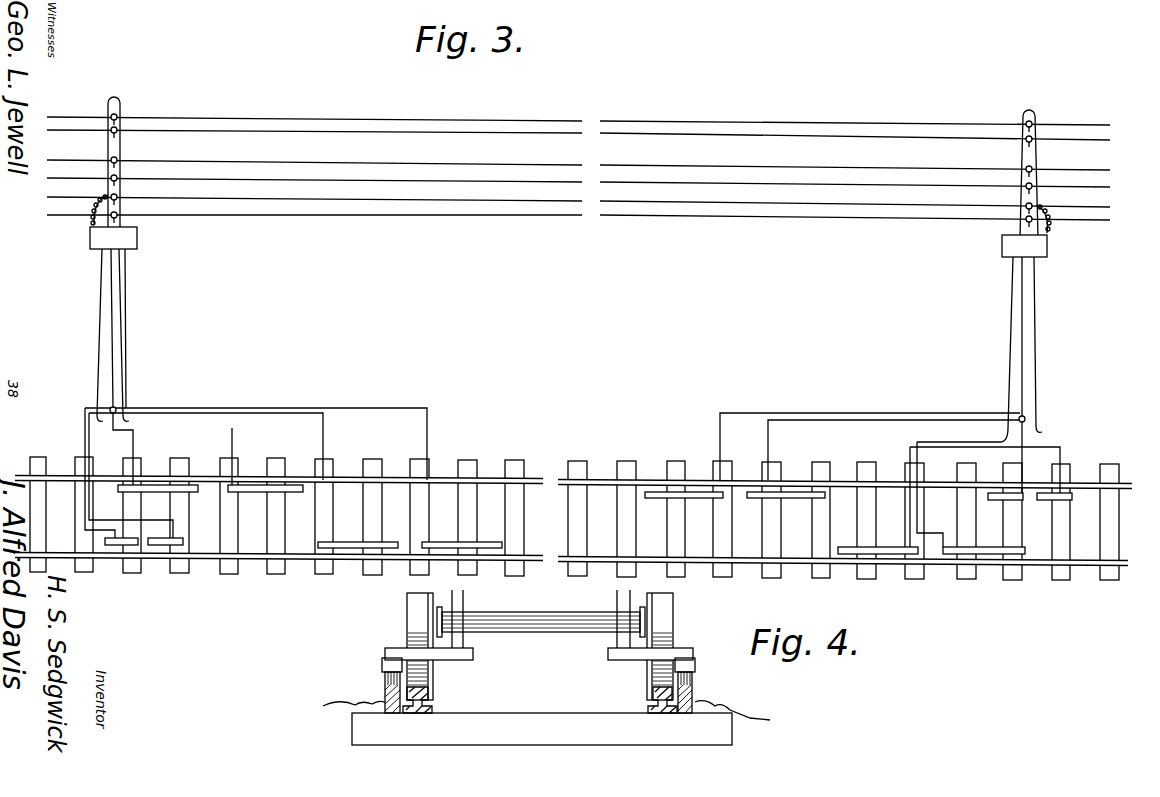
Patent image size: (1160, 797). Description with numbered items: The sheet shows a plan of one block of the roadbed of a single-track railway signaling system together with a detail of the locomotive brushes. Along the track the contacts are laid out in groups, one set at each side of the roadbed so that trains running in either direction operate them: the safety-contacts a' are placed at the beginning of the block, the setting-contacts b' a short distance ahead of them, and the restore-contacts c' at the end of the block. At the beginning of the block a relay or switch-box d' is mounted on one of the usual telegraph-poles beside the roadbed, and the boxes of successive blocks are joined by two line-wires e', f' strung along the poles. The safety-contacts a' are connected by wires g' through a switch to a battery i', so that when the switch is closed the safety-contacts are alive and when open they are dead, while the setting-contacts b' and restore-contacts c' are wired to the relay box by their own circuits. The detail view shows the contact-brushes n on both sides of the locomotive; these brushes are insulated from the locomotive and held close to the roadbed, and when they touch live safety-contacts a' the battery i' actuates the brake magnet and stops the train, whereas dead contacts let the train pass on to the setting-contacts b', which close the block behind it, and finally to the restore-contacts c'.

In FIG. 3, the safety-contacts a' is at (599, 502).
In FIG. 3, the setting-contacts b' is at (571, 514).
In FIG. 3, the restore-contacts c' is at (571, 493).
In FIG. 3, the relay or switch-box d' is at (568, 247).
In FIG. 3, the line-wire e' is at (578, 185).
In FIG. 3, the line-wire f' is at (578, 215).
In FIG. 3, the wires g' is at (570, 473).
In FIG. 3, the battery i' is at (552, 428).
In FIG. 4, the contact-brushes n is at (385, 675).